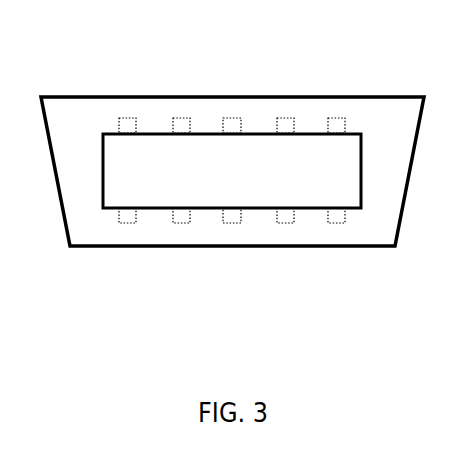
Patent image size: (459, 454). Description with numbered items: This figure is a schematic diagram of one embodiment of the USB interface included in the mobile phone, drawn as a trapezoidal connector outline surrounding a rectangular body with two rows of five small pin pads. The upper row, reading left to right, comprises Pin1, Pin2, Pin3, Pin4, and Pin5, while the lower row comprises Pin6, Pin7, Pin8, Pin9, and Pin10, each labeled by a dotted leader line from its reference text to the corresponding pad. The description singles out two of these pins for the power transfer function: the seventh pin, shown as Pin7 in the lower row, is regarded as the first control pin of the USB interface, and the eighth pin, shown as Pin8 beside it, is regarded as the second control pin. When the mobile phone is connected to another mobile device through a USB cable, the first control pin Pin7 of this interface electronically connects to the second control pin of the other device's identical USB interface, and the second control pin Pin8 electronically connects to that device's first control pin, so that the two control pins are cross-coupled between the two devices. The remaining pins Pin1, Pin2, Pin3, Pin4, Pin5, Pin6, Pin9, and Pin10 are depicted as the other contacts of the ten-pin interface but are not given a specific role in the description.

The connector pin 1 Pin1 is at (117, 113).
The connector pin 2 Pin2 is at (182, 110).
The connector pin 3 Pin3 is at (230, 116).
The connector pin 4 Pin4 is at (280, 108).
The connector pin 5 Pin5 is at (350, 111).
The connector pin 6 Pin6 is at (115, 227).
The first control pin Pin7 is at (180, 225).
The second control pin Pin8 is at (232, 225).
The connector pin 9 Pin9 is at (280, 228).
The connector pin 10 Pin10 is at (345, 228).